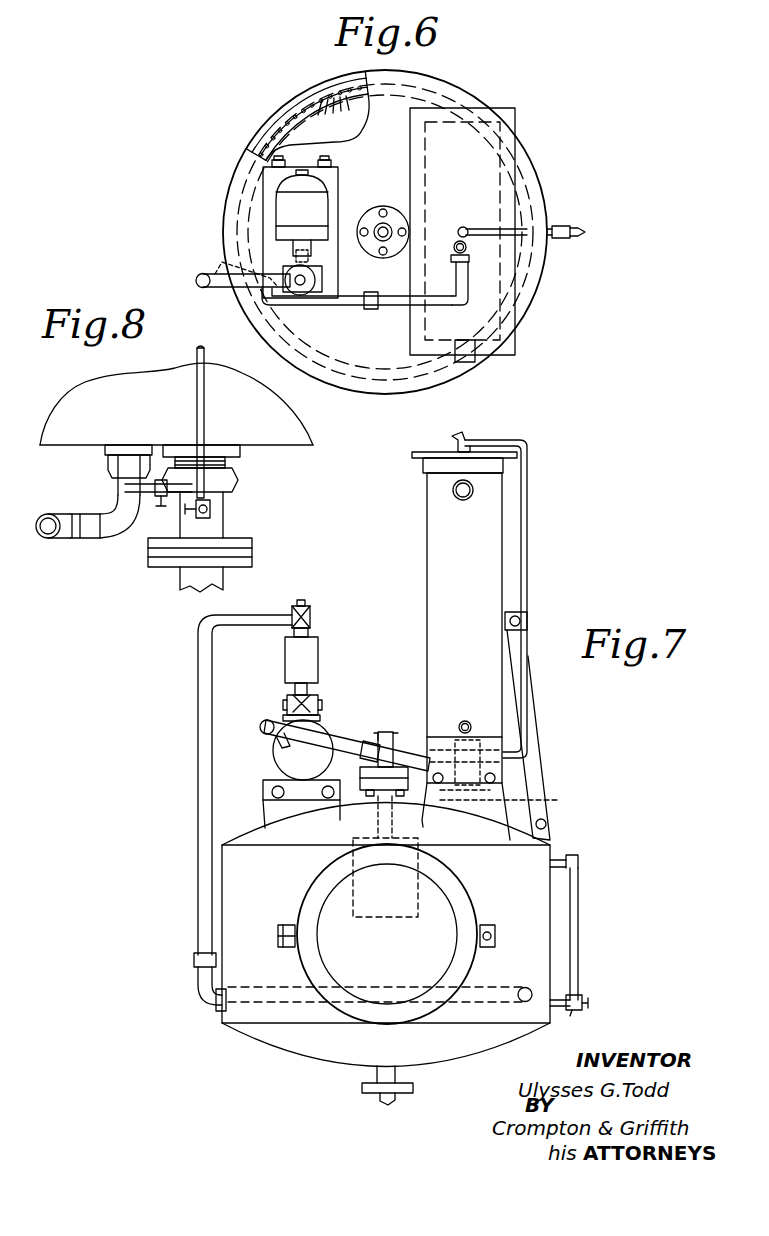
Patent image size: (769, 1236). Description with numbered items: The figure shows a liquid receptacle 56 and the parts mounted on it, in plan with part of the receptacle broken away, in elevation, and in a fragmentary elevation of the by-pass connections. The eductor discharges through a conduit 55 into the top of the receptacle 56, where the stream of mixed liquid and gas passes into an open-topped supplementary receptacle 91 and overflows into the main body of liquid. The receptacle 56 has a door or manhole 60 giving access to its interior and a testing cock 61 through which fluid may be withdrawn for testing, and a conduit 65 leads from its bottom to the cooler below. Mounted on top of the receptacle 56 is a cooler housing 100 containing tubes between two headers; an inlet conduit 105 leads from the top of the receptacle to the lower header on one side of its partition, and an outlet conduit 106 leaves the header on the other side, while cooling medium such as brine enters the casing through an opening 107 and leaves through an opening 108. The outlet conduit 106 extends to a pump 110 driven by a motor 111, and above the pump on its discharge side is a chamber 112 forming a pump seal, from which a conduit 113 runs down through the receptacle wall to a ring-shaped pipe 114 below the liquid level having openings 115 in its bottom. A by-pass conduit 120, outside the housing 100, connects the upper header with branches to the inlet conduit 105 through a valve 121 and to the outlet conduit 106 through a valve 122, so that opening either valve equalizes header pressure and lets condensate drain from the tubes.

In FIG. 7, the conduit 55 is at (400, 738).
In FIG. 6, the receptacle 56 is at (540, 186).
In FIG. 7, the receptacle 56 is at (546, 893).
In FIG. 7, the door or manhole 60 is at (476, 904).
In FIG. 6, the testing cock 61 is at (576, 226).
In FIG. 7, the testing cock 61 is at (582, 1010).
In FIG. 7, the conduit 65 is at (383, 1077).
In FIG. 7, the supplementary receptacle 91 is at (420, 893).
In FIG. 6, the cooler housing 100 is at (515, 336).
In FIG. 8, the cooler housing 100 is at (302, 426).
In FIG. 7, the cooler housing 100 is at (428, 568).
In FIG. 8, the inlet conduit 105 is at (228, 518).
In FIG. 7, the inlet conduit 105 is at (534, 798).
In FIG. 6, the outlet conduit 106 is at (394, 306).
In FIG. 8, the outlet conduit 106 is at (87, 534).
In FIG. 7, the outlet conduit 106 is at (305, 737).
In FIG. 7, the opening 107 is at (470, 713).
In FIG. 6, the opening 108 is at (470, 362).
In FIG. 7, the opening 108 is at (460, 499).
In FIG. 6, the pump 110 is at (312, 284).
In FIG. 7, the pump 110 is at (318, 732).
In FIG. 6, the motor 111 is at (318, 204).
In FIG. 7, the motor 111 is at (270, 978).
In FIG. 7, the chamber 112 is at (318, 651).
In FIG. 7, the conduit 113 is at (203, 728).
In FIG. 6, the ring-shaped pipe 114 is at (334, 90).
In FIG. 6, the openings 115 is at (352, 140).
In FIG. 6, the by-pass conduit 120 is at (485, 228).
In FIG. 8, the by-pass conduit 120 is at (204, 413).
In FIG. 7, the by-pass conduit 120 is at (528, 528).
In FIG. 8, the valve 121 is at (216, 503).
In FIG. 8, the valve 122 is at (166, 494).